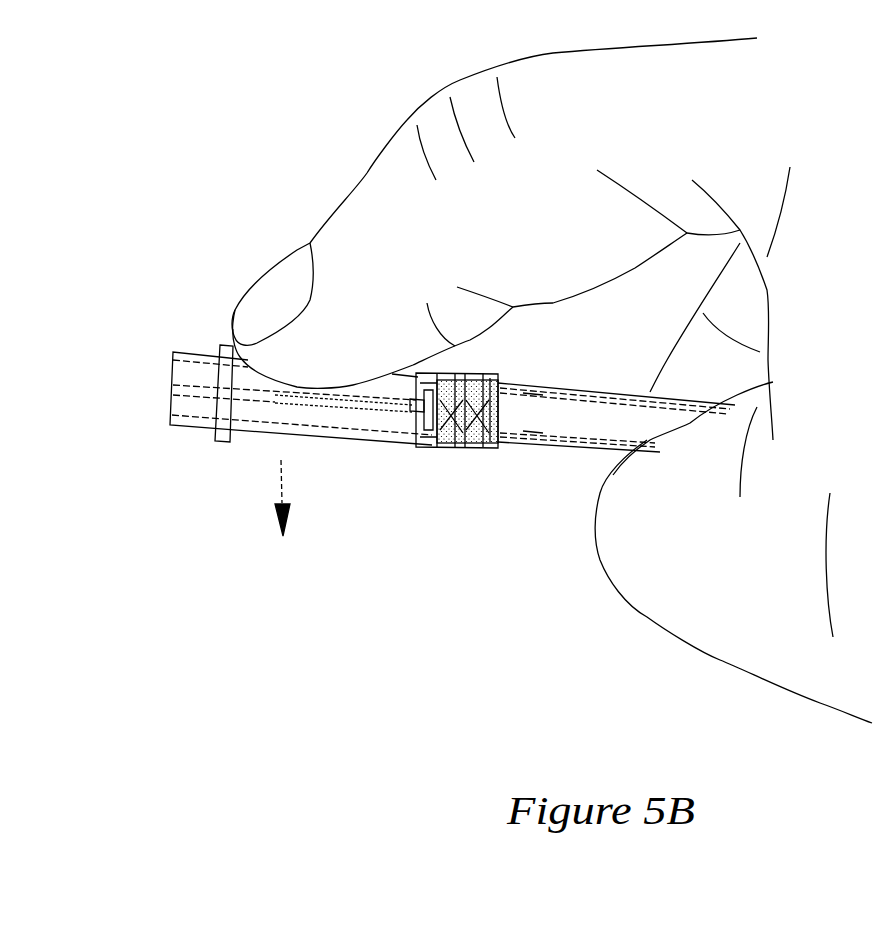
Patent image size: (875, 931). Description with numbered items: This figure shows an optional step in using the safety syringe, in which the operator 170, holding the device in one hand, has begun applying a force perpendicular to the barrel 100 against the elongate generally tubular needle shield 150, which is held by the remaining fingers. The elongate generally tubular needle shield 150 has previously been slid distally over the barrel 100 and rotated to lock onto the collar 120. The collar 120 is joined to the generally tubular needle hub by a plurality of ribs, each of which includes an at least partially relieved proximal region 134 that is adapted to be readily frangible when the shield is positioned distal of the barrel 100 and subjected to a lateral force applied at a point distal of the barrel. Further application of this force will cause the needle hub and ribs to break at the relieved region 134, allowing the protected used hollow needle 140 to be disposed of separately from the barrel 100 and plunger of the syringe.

The barrel 100 is at (578, 448).
The collar 120 is at (430, 444).
The at least partially relieved proximal region 134 is at (478, 448).
The hollow needle 140 is at (378, 412).
The elongate generally tubular needle shield 150 is at (250, 441).
The operator 170 is at (380, 193).